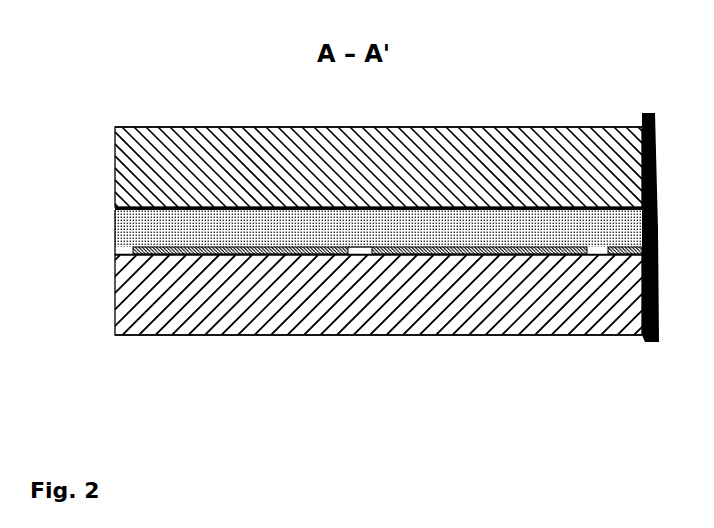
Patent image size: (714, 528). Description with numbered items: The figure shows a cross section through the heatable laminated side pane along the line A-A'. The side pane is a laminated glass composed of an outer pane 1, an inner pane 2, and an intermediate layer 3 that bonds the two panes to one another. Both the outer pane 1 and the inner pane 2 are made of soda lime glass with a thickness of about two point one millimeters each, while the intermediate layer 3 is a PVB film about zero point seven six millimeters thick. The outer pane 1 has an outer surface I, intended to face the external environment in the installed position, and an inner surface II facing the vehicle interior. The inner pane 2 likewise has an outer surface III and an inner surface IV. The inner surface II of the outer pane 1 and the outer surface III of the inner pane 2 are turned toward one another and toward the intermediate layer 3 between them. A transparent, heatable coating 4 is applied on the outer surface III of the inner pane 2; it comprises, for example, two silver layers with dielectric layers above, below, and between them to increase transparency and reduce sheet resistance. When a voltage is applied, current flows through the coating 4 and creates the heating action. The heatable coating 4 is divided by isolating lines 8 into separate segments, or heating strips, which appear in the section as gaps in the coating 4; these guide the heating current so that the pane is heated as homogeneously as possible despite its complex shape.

The outer pane 1 is at (130, 173).
The inner pane 2 is at (148, 309).
The intermediate layer 3 is at (132, 235).
The heatable coating 4 is at (273, 255).
The isolating line 8 is at (362, 246).
The outer surface I is at (145, 120).
The inner surface II is at (241, 198).
The outer surface III is at (187, 265).
The inner surface IV is at (147, 344).